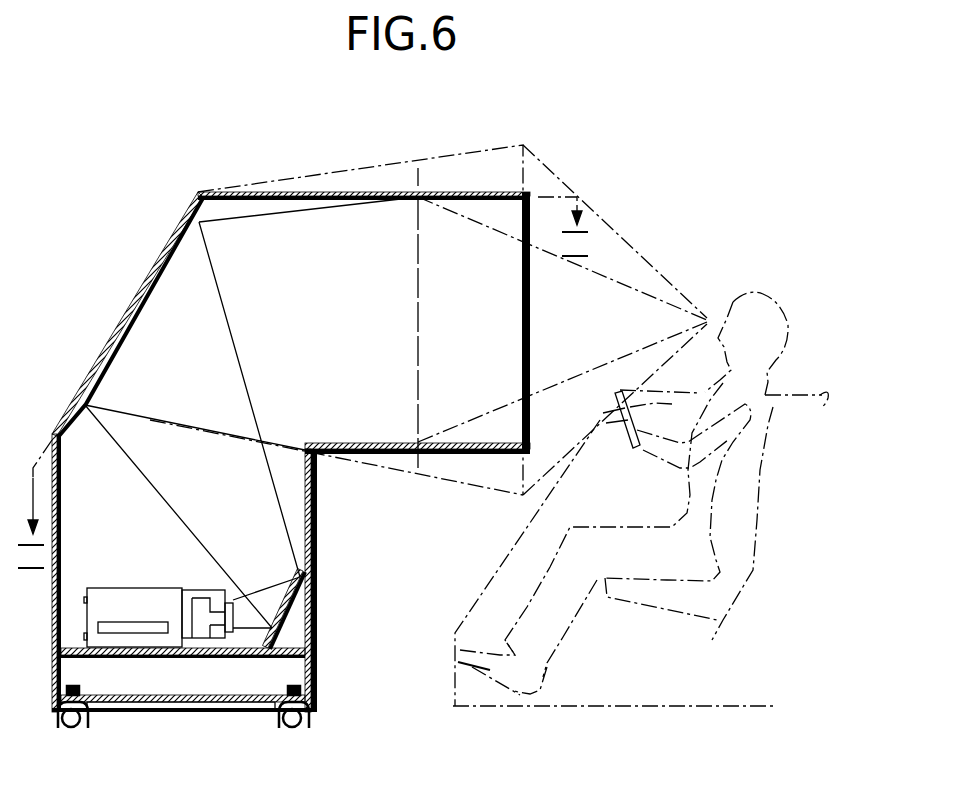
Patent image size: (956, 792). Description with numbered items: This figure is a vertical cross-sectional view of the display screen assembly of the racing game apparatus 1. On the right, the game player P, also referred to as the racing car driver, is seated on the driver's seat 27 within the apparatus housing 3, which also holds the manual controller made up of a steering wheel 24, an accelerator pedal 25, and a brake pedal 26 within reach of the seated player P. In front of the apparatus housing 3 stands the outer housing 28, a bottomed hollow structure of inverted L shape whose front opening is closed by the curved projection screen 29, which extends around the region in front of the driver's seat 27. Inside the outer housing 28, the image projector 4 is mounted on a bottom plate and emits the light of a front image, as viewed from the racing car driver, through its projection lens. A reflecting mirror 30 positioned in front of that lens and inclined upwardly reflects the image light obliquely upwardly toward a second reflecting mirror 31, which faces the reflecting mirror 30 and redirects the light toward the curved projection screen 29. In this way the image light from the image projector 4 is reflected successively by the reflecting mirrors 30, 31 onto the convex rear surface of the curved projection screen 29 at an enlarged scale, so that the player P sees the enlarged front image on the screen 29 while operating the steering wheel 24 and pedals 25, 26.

The racing game apparatus 1 is at (612, 184).
The apparatus housing 3 is at (635, 708).
The image projector 4 is at (158, 612).
The steering wheel 24 is at (677, 394).
The accelerator pedal 25 is at (480, 676).
The brake pedal 26 is at (509, 715).
The driver's seat 27 is at (762, 495).
The outer housing 28 is at (317, 497).
The curved projection screen 29 is at (418, 292).
The reflecting mirror 30 is at (293, 612).
The reflecting mirror 31 is at (130, 307).
The game player P is at (758, 298).